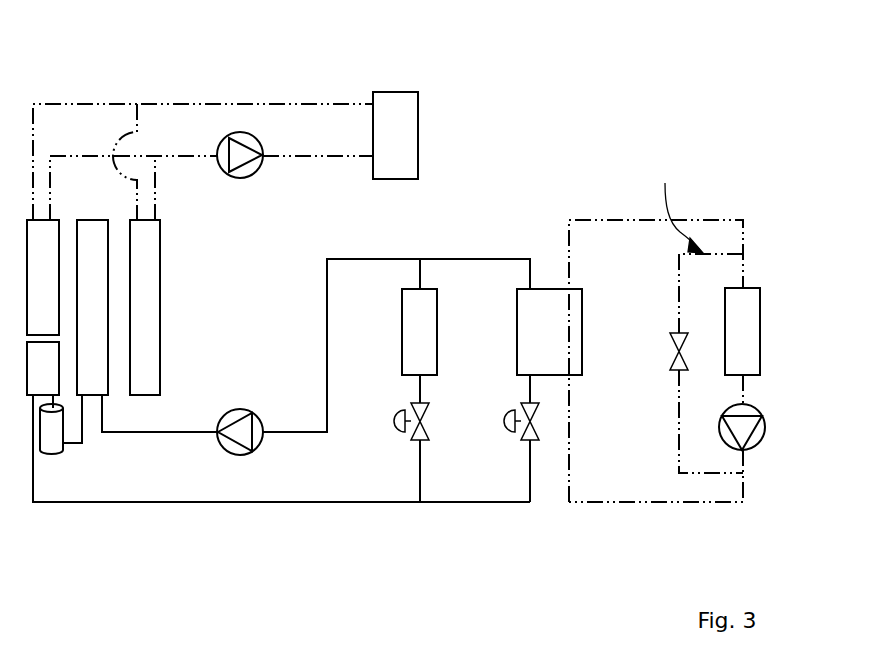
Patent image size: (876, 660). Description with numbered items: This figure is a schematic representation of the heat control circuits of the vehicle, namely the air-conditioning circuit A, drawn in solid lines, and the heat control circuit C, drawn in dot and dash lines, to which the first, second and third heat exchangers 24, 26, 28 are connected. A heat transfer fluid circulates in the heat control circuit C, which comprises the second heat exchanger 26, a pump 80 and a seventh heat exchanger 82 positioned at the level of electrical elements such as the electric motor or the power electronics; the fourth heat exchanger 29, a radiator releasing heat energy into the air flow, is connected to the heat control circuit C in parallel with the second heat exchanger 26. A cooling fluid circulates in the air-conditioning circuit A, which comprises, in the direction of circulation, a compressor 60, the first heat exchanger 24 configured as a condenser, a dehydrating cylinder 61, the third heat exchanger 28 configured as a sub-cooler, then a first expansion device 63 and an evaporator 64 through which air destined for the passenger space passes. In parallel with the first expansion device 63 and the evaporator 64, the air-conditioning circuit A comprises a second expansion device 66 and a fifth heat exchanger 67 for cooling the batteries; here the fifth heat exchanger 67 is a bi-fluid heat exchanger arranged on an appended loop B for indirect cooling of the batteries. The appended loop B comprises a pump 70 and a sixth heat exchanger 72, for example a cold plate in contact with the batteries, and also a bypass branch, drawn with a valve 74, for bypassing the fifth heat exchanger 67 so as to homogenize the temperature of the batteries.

The first heat exchanger 24 is at (92, 307).
The second heat exchanger 26 is at (43, 277).
The third heat exchanger 28 is at (43, 368).
The fourth heat exchanger 29 is at (145, 307).
The compressor 60 is at (238, 409).
The dehydrating cylinder 61 is at (48, 454).
The first expansion device 63 is at (392, 425).
The evaporator 64 is at (419, 332).
The second expansion device 66 is at (502, 425).
The fifth heat exchanger 67 is at (549, 332).
The pump 70 is at (766, 430).
The sixth heat exchanger 72 is at (742, 331).
The valve 74 is at (674, 362).
The pump 80 is at (238, 177).
The seventh heat exchanger 82 is at (395, 135).
The air-conditioning circuit A is at (248, 503).
The appended loop B is at (627, 503).
The heat control circuit C is at (256, 104).